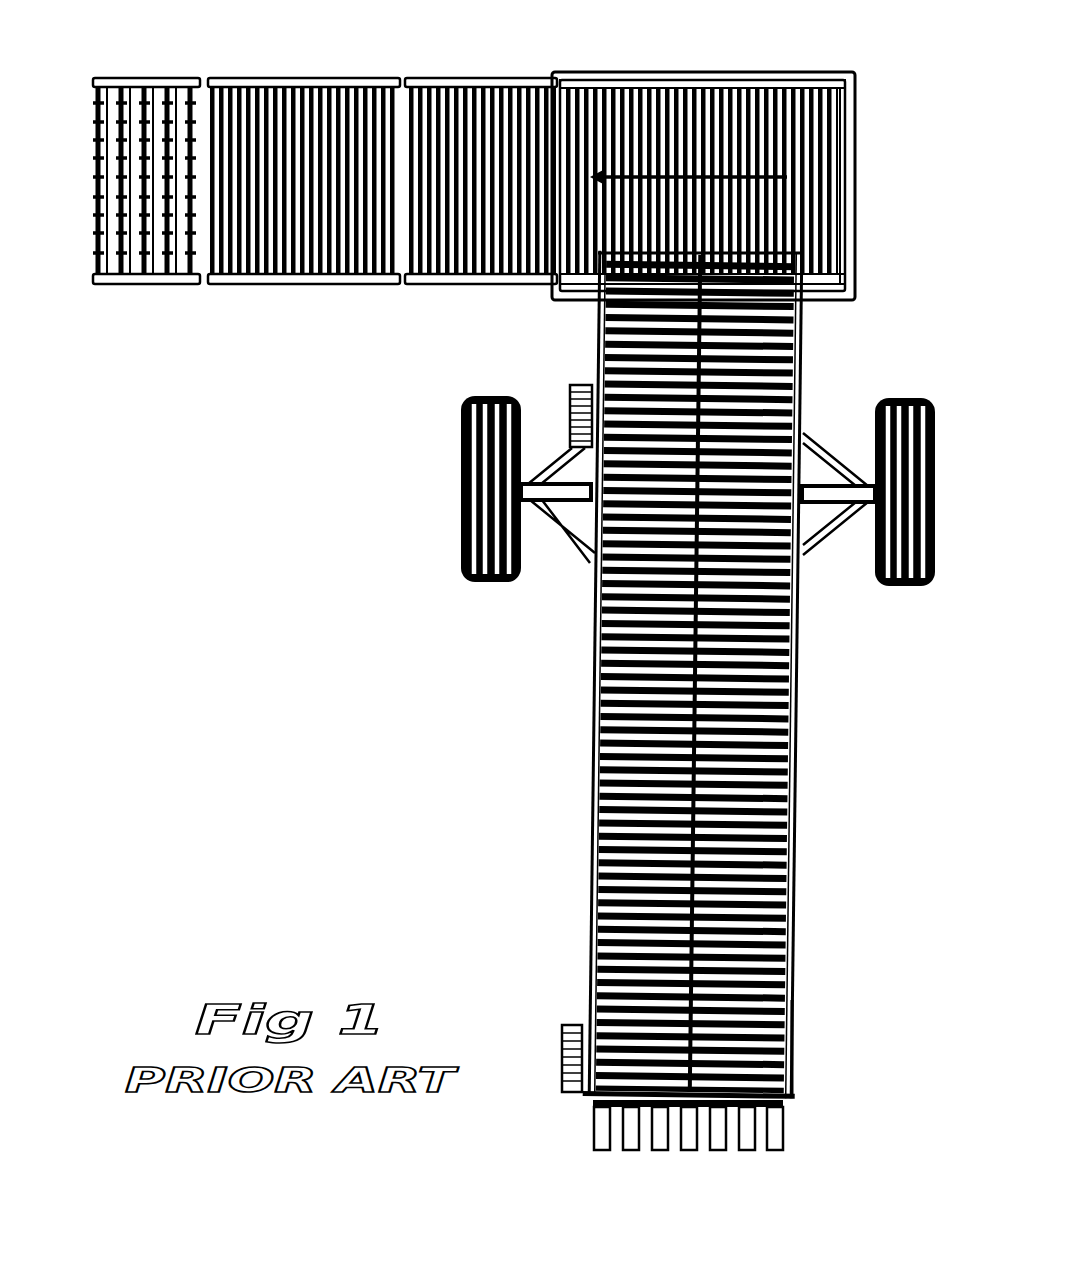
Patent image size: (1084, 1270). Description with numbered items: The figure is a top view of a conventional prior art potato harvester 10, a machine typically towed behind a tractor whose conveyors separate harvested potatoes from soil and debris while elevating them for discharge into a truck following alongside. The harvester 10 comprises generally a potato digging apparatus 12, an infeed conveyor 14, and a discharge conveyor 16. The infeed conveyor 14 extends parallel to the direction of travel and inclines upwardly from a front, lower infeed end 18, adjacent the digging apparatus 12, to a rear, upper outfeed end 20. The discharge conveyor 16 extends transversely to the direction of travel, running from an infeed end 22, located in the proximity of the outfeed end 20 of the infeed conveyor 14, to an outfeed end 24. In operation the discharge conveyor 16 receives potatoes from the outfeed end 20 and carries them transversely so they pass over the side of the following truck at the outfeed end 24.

The potato harvester 10 is at (360, 434).
The potato digging apparatus 12 is at (595, 1132).
The infeed conveyor 14 is at (582, 806).
The discharge conveyor 16 is at (244, 296).
The infeed end 18 is at (797, 1068).
The outfeed end 20 is at (803, 297).
The infeed end 22 is at (848, 118).
The outfeed end 24 is at (122, 80).